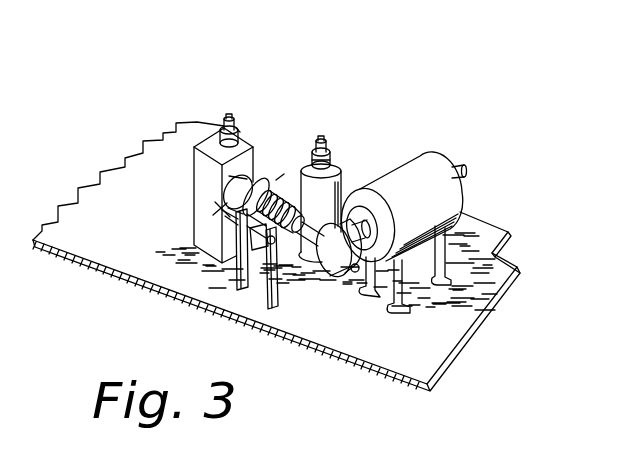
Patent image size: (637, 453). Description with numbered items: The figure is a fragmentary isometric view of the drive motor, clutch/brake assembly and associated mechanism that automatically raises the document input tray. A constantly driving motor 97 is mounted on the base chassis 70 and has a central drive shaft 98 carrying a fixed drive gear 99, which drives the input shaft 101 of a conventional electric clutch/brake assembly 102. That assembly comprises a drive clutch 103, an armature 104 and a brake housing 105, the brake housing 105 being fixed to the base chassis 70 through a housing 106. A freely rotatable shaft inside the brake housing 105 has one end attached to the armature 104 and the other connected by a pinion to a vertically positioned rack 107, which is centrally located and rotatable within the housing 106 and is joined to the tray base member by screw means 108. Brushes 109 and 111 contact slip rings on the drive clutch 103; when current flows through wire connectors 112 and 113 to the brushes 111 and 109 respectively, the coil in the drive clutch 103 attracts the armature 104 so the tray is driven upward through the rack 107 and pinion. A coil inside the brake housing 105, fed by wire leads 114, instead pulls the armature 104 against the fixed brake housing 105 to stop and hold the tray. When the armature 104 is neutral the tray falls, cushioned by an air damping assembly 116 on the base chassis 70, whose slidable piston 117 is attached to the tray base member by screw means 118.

The base chassis 70 is at (490, 270).
The drive motor 97 is at (440, 158).
The central drive shaft 98 is at (466, 171).
The drive gear 99 is at (332, 280).
The input shaft 101 is at (293, 248).
The clutch/brake assembly 102 is at (280, 177).
The drive clutch 103 is at (270, 208).
The armature 104 is at (325, 150).
The brake housing 105 is at (247, 172).
The housing 106 is at (203, 172).
The rack 107 is at (238, 130).
The screw means 108 is at (227, 115).
The brush 109 is at (250, 246).
The brush 111 is at (232, 258).
The wire connector 112 is at (280, 253).
The wire connector 113 is at (262, 247).
The wire leads 114 is at (210, 208).
The air damping assembly 116 is at (330, 195).
The piston 117 is at (333, 158).
The screw means 118 is at (327, 147).